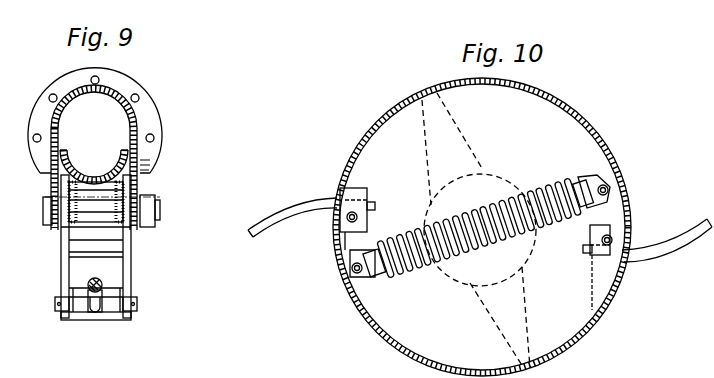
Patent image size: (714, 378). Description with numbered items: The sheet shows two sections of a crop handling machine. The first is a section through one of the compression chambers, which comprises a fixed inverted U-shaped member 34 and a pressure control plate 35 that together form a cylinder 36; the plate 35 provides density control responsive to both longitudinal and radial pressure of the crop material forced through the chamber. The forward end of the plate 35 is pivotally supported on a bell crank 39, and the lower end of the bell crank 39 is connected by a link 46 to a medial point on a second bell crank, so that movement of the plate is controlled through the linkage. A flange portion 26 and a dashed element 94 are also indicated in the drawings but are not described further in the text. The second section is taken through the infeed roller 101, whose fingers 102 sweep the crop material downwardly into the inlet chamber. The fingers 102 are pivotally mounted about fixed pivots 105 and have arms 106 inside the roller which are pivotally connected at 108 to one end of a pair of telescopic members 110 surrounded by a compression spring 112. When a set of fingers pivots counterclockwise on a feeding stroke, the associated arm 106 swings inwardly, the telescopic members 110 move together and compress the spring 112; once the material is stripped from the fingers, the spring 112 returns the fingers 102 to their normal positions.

In FIG. 9, the flange 26 is at (148, 157).
In FIG. 9, the inverted U-shaped member 34 is at (135, 117).
In FIG. 9, the pressure control plate 35 is at (98, 172).
In FIG. 9, the cylinder 36 is at (73, 108).
In FIG. 9, the bell crank 39 is at (128, 262).
In FIG. 9, the link 46 is at (98, 313).
In FIG. 10, the belt path 94 is at (458, 127).
In FIG. 10, the infeed roller 101 is at (590, 133).
In FIG. 10, the fingers 102 is at (282, 204).
In FIG. 10, the fixed pivots 105 is at (608, 240).
In FIG. 10, the arms 106 is at (610, 212).
In FIG. 10, the pivotal connection 108 is at (604, 187).
In FIG. 10, the telescopic members 110 is at (470, 205).
In FIG. 10, the compression spring 112 is at (542, 188).